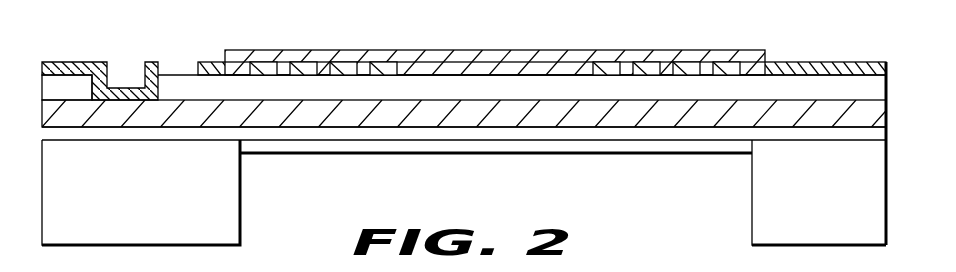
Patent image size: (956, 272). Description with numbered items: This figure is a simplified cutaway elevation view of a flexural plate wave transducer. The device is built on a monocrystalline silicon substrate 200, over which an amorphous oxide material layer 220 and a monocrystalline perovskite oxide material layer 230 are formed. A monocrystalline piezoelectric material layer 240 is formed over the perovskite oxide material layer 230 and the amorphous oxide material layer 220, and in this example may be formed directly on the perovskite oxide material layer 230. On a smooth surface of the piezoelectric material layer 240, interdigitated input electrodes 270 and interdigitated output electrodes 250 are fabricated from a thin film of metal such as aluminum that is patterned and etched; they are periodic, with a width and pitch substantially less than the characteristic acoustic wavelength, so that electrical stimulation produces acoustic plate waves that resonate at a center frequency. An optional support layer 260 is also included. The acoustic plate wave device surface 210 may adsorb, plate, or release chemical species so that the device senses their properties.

The monocrystalline silicon substrate 200 is at (120, 203).
The acoustic plate wave device surface 210 is at (410, 150).
The amorphous oxide material layer 220 is at (495, 134).
The monocrystalline perovskite oxide material layer 230 is at (583, 113).
The monocrystalline piezoelectric material layer 240 is at (827, 72).
The interdigitated output electrodes 250 is at (700, 62).
The support layer 260 is at (490, 50).
The interdigitated input electrodes 270 is at (275, 62).